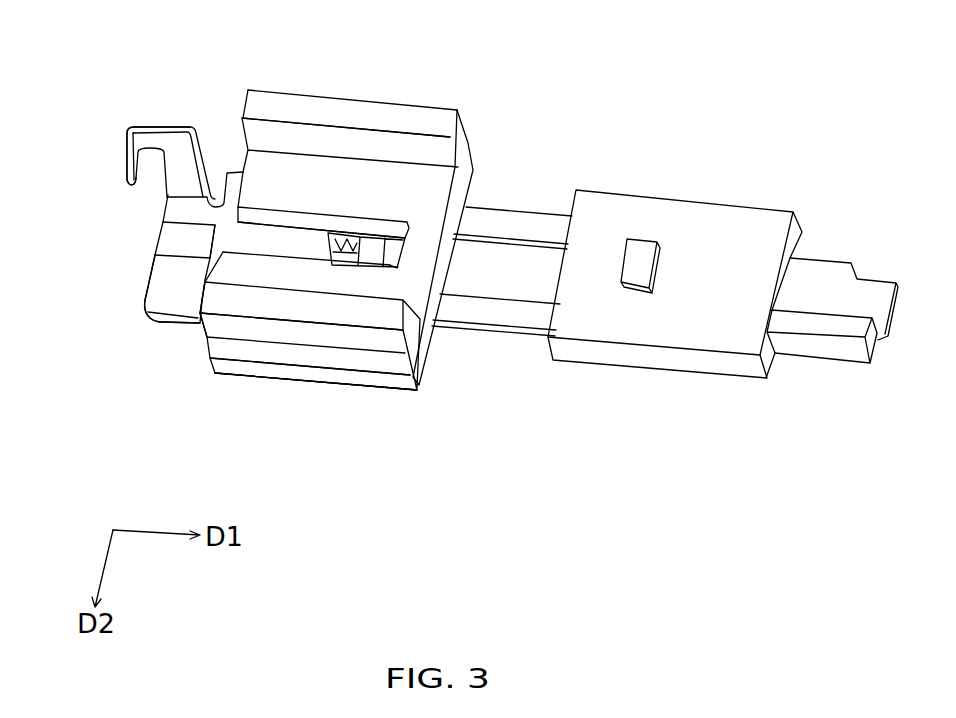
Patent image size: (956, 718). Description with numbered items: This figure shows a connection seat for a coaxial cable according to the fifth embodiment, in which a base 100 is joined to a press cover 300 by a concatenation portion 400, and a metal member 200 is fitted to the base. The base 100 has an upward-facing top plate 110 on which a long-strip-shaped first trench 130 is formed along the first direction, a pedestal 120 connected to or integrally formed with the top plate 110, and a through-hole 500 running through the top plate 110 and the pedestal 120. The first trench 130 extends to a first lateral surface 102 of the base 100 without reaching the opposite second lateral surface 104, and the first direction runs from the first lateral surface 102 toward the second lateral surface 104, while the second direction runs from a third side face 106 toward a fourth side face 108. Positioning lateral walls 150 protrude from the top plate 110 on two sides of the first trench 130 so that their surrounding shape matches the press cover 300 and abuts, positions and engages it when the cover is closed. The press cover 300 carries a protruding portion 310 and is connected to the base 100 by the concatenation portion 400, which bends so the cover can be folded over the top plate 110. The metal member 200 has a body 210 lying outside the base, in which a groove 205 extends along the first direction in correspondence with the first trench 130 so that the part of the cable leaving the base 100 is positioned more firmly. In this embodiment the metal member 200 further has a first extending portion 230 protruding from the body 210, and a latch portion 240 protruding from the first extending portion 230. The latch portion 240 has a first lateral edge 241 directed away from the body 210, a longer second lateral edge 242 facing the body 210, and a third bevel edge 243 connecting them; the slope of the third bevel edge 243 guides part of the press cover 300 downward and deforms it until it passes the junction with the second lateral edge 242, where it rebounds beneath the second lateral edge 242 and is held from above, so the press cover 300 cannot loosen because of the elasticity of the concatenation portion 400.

The base 100 is at (324, 244).
The first lateral surface 102 is at (203, 340).
The second lateral surface 104 is at (428, 350).
The third side face 106 is at (363, 100).
The fourth side face 108 is at (226, 362).
The top plate 110 is at (305, 167).
The pedestal 120 is at (381, 378).
The first trench 130 is at (273, 240).
The positioning lateral walls 150 is at (277, 104).
The metal member 200 is at (121, 229).
The groove 205 is at (177, 242).
The body 210 is at (162, 287).
The first extending portion 230 is at (180, 163).
The latch portion 240 is at (95, 168).
The first lateral edge 241 is at (132, 134).
The second lateral edge 242 is at (137, 184).
The third bevel edge 243 is at (132, 168).
The press cover 300 is at (723, 301).
The protruding portion 310 is at (643, 245).
The concatenation portion 400 is at (504, 208).
The through-hole 500 is at (348, 233).